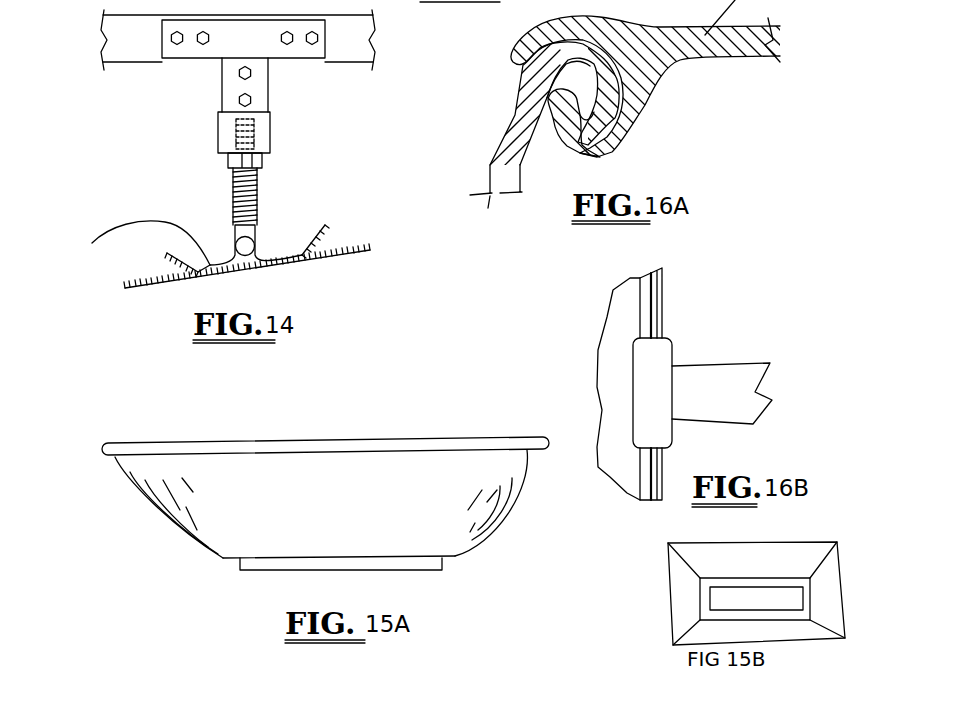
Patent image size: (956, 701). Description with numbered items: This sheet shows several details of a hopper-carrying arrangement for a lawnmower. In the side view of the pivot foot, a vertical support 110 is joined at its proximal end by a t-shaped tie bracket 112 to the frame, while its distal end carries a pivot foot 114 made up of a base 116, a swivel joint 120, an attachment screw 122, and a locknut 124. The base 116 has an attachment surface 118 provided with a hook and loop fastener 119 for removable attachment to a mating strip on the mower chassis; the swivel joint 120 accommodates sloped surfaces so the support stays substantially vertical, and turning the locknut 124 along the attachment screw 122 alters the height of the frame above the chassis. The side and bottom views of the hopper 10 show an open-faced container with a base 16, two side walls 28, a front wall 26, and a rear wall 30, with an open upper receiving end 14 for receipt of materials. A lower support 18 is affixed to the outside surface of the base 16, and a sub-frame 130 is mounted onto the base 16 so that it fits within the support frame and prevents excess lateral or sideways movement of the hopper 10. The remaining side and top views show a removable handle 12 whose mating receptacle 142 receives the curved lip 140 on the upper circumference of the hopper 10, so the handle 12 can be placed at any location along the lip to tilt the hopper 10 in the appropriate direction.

In FIG. 16A, the hopper 10 is at (484, 88).
In FIG. 16B, the hopper 10 is at (580, 308).
In FIG. 15A, the hopper 10 is at (282, 426).
In FIG. 15B, the hopper 10 is at (753, 568).
In FIG. 16B, the removable handle 12 is at (720, 382).
In FIG. 15A, the upper receiving end 14 is at (375, 447).
In FIG. 15A, the base 16 is at (335, 553).
In FIG. 15B, the base 16 is at (757, 608).
In FIG. 15A, the lower support 18 is at (257, 584).
In FIG. 15A, the front wall 26 is at (145, 502).
In FIG. 15A, the side walls 28 is at (314, 510).
In FIG. 16A, the rear wall 30 is at (500, 125).
In FIG. 16B, the rear wall 30 is at (650, 313).
In FIG. 15A, the rear wall 30 is at (508, 502).
In FIG. 14, the vertical support 110 is at (312, 110).
In FIG. 14, the t-shaped tie bracket 112 is at (184, 87).
In FIG. 14, the pivot foot 114 is at (212, 212).
In FIG. 14, the base 116 is at (128, 247).
In FIG. 14, the attachment surface 118 is at (337, 235).
In FIG. 14, the hook and loop fastener 119 is at (168, 262).
In FIG. 14, the swivel joint 120 is at (248, 247).
In FIG. 14, the attachment screw 122 is at (260, 203).
In FIG. 14, the locknut 124 is at (227, 153).
In FIG. 15A, the sub-frame 130 is at (362, 572).
In FIG. 15B, the sub-frame 130 is at (770, 582).
In FIG. 16A, the curved lip 140 is at (594, 118).
In FIG. 16A, the mating receptacle 142 is at (613, 140).